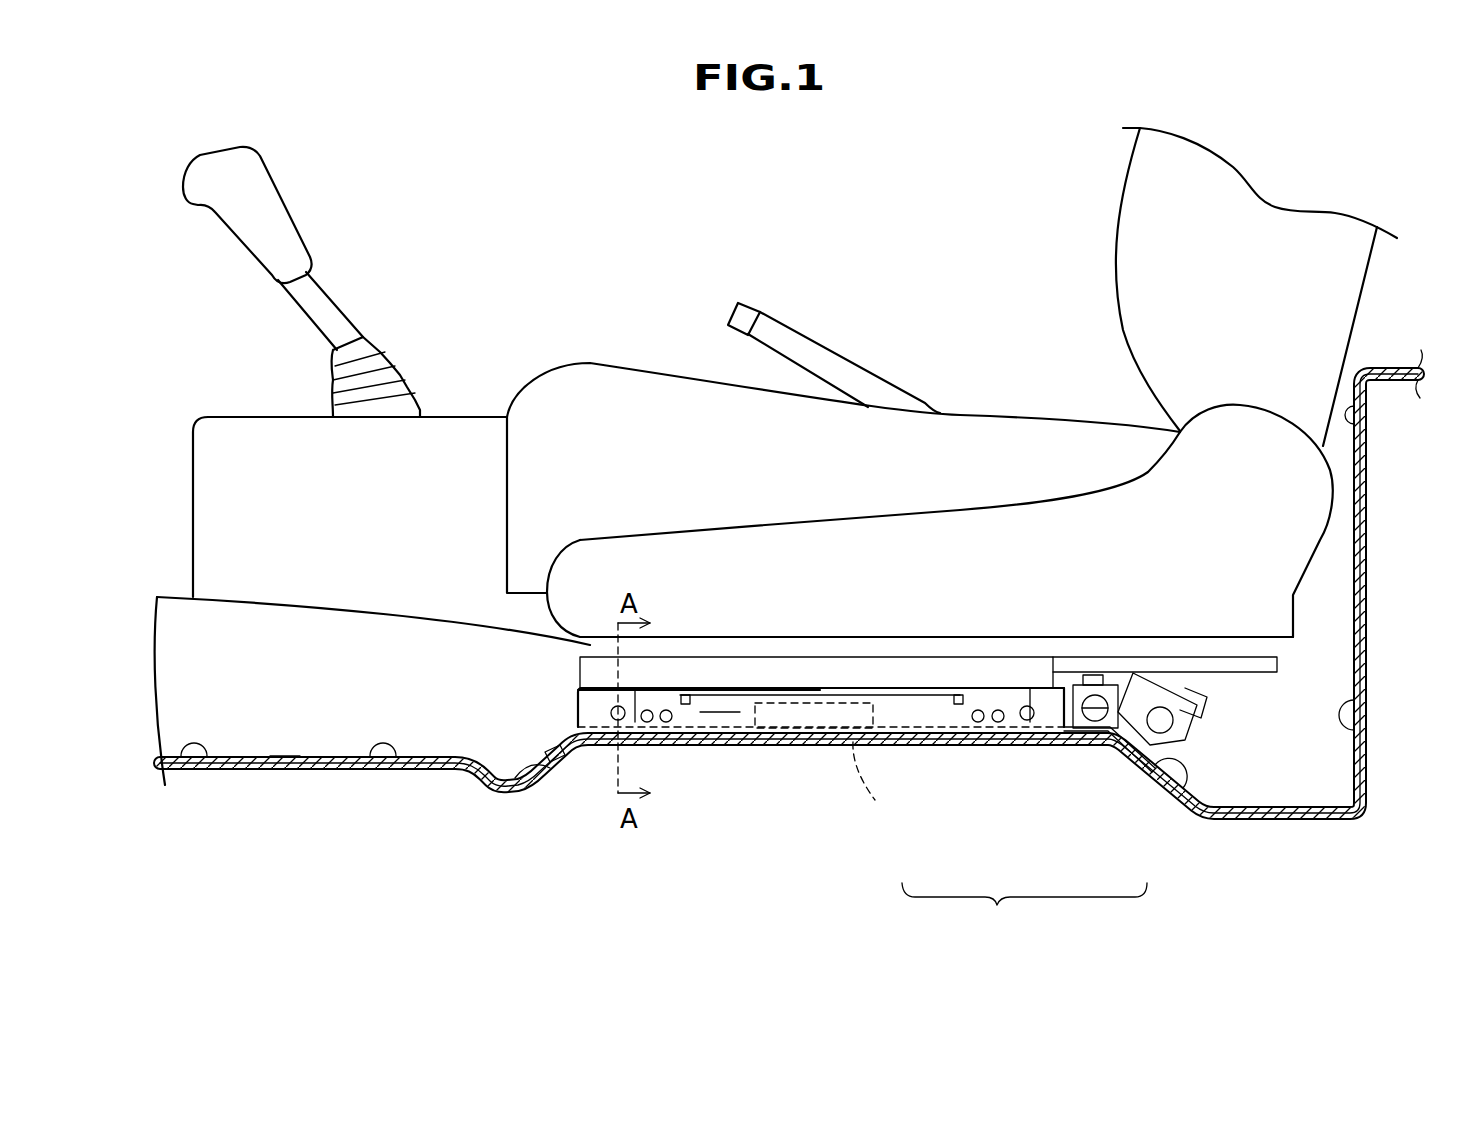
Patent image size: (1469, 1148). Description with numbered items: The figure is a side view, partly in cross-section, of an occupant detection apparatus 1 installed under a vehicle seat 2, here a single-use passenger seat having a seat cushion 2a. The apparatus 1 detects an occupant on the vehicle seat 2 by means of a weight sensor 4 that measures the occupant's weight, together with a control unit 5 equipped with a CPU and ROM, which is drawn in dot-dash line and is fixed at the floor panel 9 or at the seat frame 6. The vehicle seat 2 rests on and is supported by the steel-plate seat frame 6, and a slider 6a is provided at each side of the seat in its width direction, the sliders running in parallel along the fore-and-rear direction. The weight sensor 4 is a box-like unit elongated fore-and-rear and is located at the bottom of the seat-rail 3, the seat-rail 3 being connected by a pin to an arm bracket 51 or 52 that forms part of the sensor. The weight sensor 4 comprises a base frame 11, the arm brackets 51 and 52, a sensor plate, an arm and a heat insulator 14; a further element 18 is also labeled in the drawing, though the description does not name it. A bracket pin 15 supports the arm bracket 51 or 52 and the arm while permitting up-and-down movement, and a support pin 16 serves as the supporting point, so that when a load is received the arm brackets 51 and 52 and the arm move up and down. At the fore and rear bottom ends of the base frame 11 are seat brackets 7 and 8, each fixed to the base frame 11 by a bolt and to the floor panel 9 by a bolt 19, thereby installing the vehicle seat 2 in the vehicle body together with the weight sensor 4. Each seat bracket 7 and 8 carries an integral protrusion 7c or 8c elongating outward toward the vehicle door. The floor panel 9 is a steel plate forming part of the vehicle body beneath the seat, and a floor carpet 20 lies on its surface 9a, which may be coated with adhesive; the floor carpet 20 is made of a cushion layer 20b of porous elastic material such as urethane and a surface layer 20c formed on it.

The occupant detection apparatus 1 is at (1133, 909).
The vehicle seat 2 is at (548, 369).
The seat cushion 2a is at (743, 547).
The seat-rail 3 is at (583, 672).
The weight sensor 4 is at (905, 734).
The control unit 5 is at (853, 745).
The seat frame 6 is at (593, 653).
The slider 6a is at (1277, 668).
The seat bracket 7 is at (500, 783).
The protrusion 7c is at (635, 730).
The seat bracket 8 is at (1152, 757).
The protrusion 8c is at (1030, 730).
The floor panel 9 is at (324, 771).
The surface 9a is at (369, 770).
The base frame 11 is at (732, 713).
The heat insulator 14 is at (813, 690).
The bracket pin 15 is at (613, 722).
The support pin 16 is at (668, 724).
The beam end 18 is at (958, 695).
The bolt 19 is at (558, 755).
The floor carpet 20 is at (241, 755).
The cushion layer 20b is at (279, 768).
The surface layer 20c is at (180, 762).
The arm bracket 51 is at (582, 690).
The arm bracket 52 is at (1065, 688).